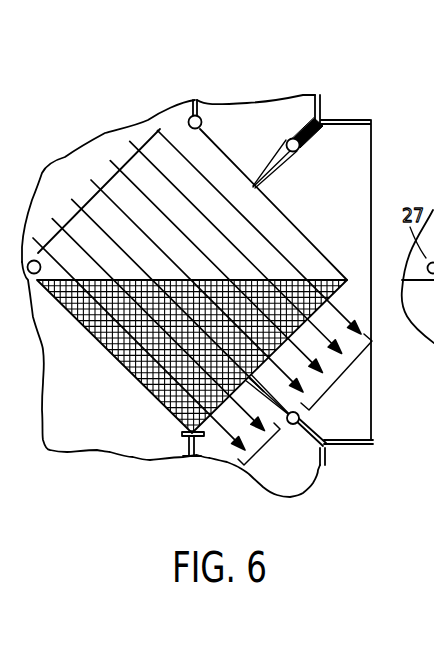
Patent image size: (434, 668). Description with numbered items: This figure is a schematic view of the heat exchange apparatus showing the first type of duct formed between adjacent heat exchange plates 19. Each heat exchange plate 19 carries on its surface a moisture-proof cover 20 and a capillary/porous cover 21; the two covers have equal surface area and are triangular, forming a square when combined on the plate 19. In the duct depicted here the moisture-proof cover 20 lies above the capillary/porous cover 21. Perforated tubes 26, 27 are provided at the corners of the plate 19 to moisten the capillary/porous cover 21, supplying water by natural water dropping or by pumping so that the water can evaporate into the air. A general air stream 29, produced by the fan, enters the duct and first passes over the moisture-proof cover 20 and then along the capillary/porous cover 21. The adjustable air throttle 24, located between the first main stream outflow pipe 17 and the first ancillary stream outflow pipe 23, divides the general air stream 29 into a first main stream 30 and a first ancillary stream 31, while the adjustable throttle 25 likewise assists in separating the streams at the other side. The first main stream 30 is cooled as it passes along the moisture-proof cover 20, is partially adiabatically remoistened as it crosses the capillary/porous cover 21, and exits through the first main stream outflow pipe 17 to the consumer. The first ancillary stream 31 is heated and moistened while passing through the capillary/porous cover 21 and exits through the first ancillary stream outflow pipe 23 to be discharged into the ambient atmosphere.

The first main stream outflow pipe 17 is at (352, 433).
The heat exchange plate 19 is at (138, 383).
The moisture-proof cover 20 is at (263, 213).
The capillary/porous cover 21 is at (298, 278).
The first ancillary stream outflow pipe 23 is at (268, 477).
The adjustable air throttle 24 is at (327, 457).
The adjustable throttle 25 is at (323, 121).
The perforated tube 26 is at (200, 117).
The perforated tube 27 is at (30, 275).
The general air stream 29 is at (94, 191).
The first main stream 30 is at (333, 389).
The first ancillary stream 31 is at (265, 452).